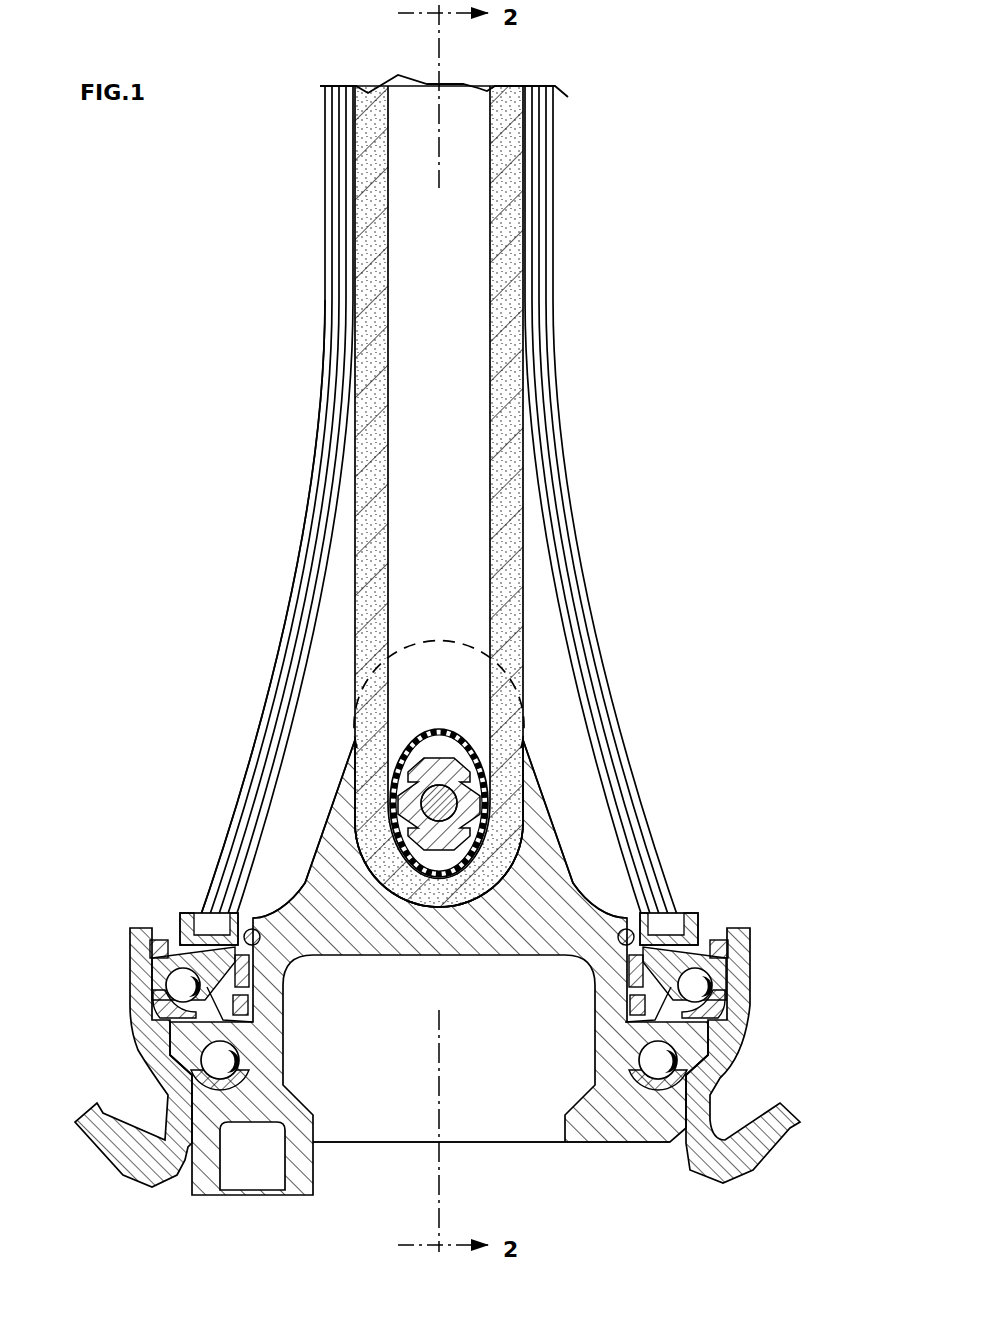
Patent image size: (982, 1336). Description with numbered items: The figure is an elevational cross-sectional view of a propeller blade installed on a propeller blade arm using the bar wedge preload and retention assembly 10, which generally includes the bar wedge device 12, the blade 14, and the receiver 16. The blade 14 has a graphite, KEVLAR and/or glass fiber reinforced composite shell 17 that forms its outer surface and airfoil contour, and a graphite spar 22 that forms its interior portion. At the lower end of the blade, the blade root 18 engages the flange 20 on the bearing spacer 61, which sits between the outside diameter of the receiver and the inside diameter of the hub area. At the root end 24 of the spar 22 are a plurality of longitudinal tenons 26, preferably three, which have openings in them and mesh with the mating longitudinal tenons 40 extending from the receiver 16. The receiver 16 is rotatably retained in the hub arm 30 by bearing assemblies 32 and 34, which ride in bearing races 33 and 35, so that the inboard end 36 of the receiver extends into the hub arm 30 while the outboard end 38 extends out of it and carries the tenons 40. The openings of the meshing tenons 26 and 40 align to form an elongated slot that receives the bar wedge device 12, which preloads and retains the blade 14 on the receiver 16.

The bar wedge preload and retention assembly 10 is at (712, 291).
The bar wedge device 12 is at (463, 738).
The blade 14 is at (320, 346).
The receiver 16 is at (345, 932).
The composite shell 17 is at (298, 562).
The blade root 18 is at (762, 898).
The flange 20 is at (185, 913).
The graphite spar 22 is at (498, 367).
The root end 24 is at (527, 803).
The longitudinal tenons 26 is at (445, 907).
The hub arm 30 is at (725, 1182).
The bearing assembly 32 is at (702, 985).
The bearing race 33 is at (703, 1015).
The bearing assembly 34 is at (686, 1070).
The bearing race 35 is at (663, 1032).
The inboard end 36 is at (644, 1143).
The outboard end 38 is at (543, 766).
The longitudinal tenons 40 is at (478, 683).
The bearing spacer 61 is at (143, 920).